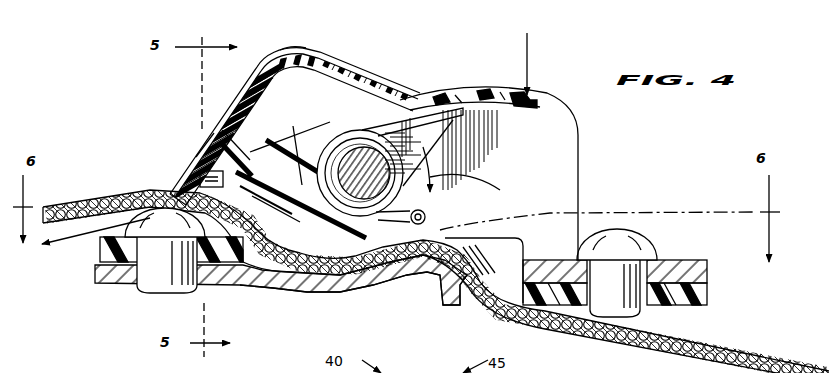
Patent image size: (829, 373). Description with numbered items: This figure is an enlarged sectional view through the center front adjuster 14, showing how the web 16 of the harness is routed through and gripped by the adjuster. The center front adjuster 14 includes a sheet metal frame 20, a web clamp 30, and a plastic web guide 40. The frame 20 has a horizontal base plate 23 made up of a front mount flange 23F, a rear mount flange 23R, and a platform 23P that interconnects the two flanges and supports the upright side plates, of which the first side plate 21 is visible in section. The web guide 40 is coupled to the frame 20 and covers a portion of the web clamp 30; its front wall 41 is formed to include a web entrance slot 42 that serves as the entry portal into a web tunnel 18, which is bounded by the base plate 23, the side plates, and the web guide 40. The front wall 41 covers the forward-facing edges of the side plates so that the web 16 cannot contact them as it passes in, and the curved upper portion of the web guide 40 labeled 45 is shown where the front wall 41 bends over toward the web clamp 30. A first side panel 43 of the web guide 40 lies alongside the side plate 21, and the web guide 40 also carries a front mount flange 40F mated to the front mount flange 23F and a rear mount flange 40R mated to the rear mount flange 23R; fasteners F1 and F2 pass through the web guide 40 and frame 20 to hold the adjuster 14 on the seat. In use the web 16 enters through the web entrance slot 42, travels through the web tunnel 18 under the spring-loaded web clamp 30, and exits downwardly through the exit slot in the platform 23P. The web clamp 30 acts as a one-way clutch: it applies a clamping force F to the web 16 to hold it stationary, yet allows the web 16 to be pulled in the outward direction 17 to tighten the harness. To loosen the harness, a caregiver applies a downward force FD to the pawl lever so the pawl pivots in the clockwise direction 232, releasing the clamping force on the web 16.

The center front adjuster 14 is at (565, 78).
The web 16 is at (84, 198).
The outward direction 17 is at (68, 235).
The web tunnel 18 is at (240, 182).
The frame 20 is at (584, 191).
The first side plate 21 is at (552, 140).
The horizontal base plate 23 is at (694, 270).
The front mount flange 23F is at (126, 286).
The platform 23P is at (352, 290).
The rear mount flange 23R is at (660, 266).
The web clamp 30 is at (481, 84).
The web guide 40 is at (357, 58).
The front mount flange 40F is at (110, 250).
The rear mount flange 40R is at (663, 296).
The front wall 41 is at (203, 153).
The web entrance slot 42 is at (190, 177).
The first side panel 43 is at (524, 162).
The cover bend 45 is at (305, 42).
The clockwise direction 232 is at (483, 183).
The clamping force F is at (293, 146).
The fastener F1 is at (158, 284).
The fastener F2 is at (618, 236).
The downward force FD is at (533, 46).